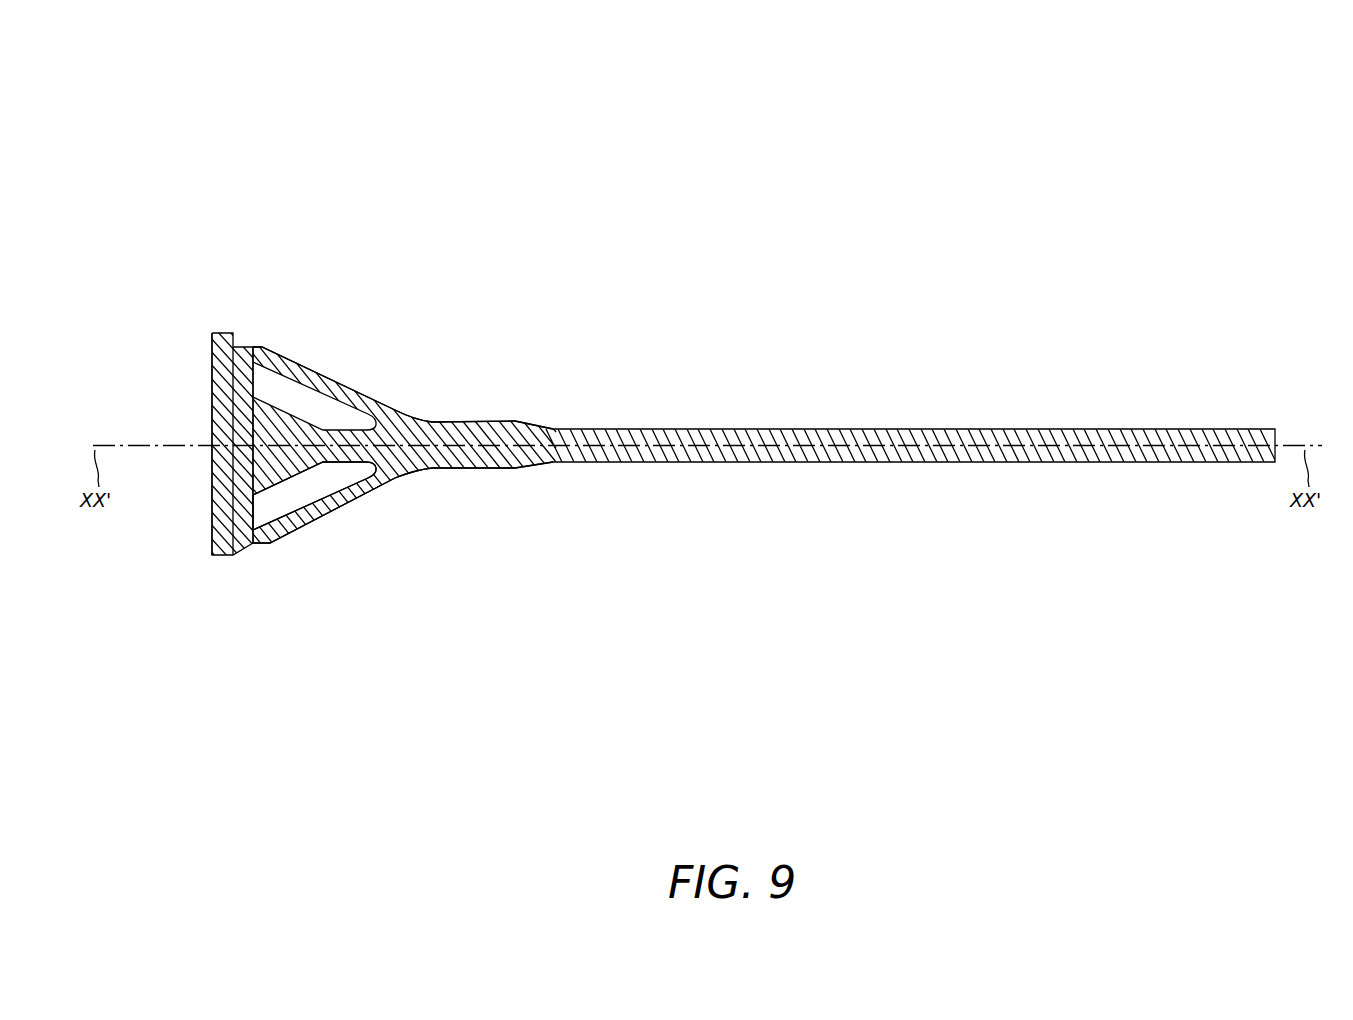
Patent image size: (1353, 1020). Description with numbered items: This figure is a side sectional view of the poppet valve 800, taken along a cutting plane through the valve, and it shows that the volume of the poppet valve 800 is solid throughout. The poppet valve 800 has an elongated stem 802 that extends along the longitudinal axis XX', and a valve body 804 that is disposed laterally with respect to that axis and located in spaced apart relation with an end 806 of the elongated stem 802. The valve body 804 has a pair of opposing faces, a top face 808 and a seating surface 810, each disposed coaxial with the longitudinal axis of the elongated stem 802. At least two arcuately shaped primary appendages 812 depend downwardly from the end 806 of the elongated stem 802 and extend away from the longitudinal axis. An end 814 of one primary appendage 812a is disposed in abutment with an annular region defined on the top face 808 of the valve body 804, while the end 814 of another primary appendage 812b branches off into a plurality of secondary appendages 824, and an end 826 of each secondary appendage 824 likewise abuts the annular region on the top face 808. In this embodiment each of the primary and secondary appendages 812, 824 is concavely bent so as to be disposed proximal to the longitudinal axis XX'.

The poppet valve 800 is at (1215, 146).
The elongated stem 802 is at (1211, 419).
The valve body 804 is at (222, 567).
The end of the elongated stem 806 is at (437, 420).
The top face 808 is at (264, 514).
The seating surface 810 is at (212, 390).
The primary appendages 812 is at (324, 418).
The primary appendage 812a is at (354, 440).
The primary appendage 812b is at (360, 438).
The end of primary appendage 814 is at (305, 440).
The secondary appendages 824 is at (259, 463).
The end of secondary appendage 826 is at (267, 487).